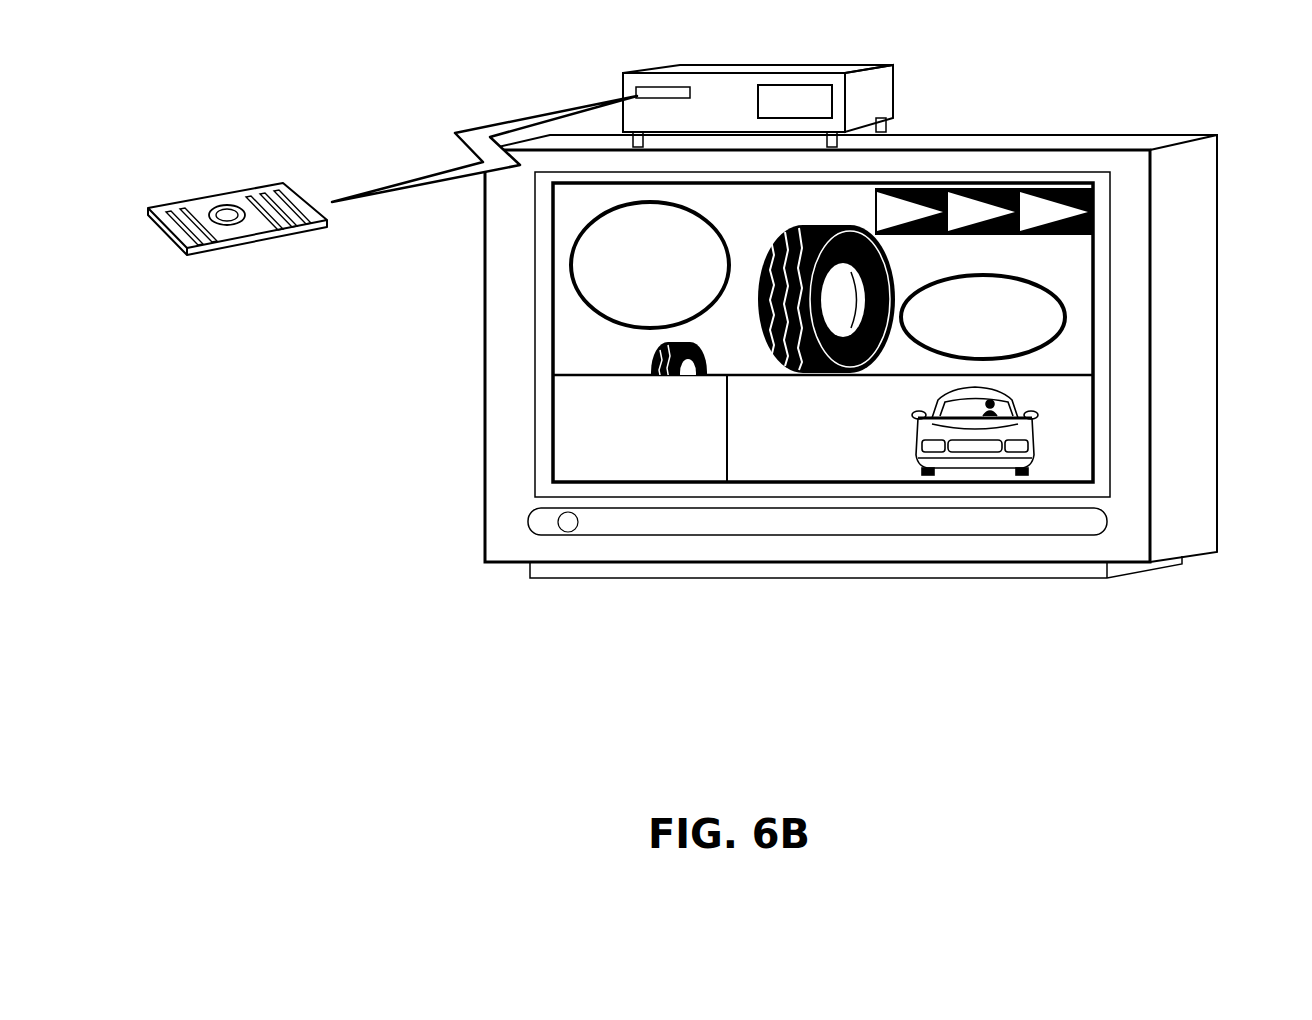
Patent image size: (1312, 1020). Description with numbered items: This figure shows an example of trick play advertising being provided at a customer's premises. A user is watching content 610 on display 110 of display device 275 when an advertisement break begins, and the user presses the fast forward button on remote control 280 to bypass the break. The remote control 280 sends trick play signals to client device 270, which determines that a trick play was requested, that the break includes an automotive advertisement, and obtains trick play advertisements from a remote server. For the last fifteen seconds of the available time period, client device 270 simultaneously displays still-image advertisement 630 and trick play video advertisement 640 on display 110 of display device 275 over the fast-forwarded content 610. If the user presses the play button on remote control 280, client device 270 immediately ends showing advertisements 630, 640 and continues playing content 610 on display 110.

The display 110 is at (1090, 275).
The client device 270 is at (658, 72).
The display device 275 is at (1003, 146).
The remote control 280 is at (250, 187).
The content 610 is at (570, 351).
The still-image advertisement 630 is at (570, 465).
The trick play video advertisement 640 is at (1085, 428).